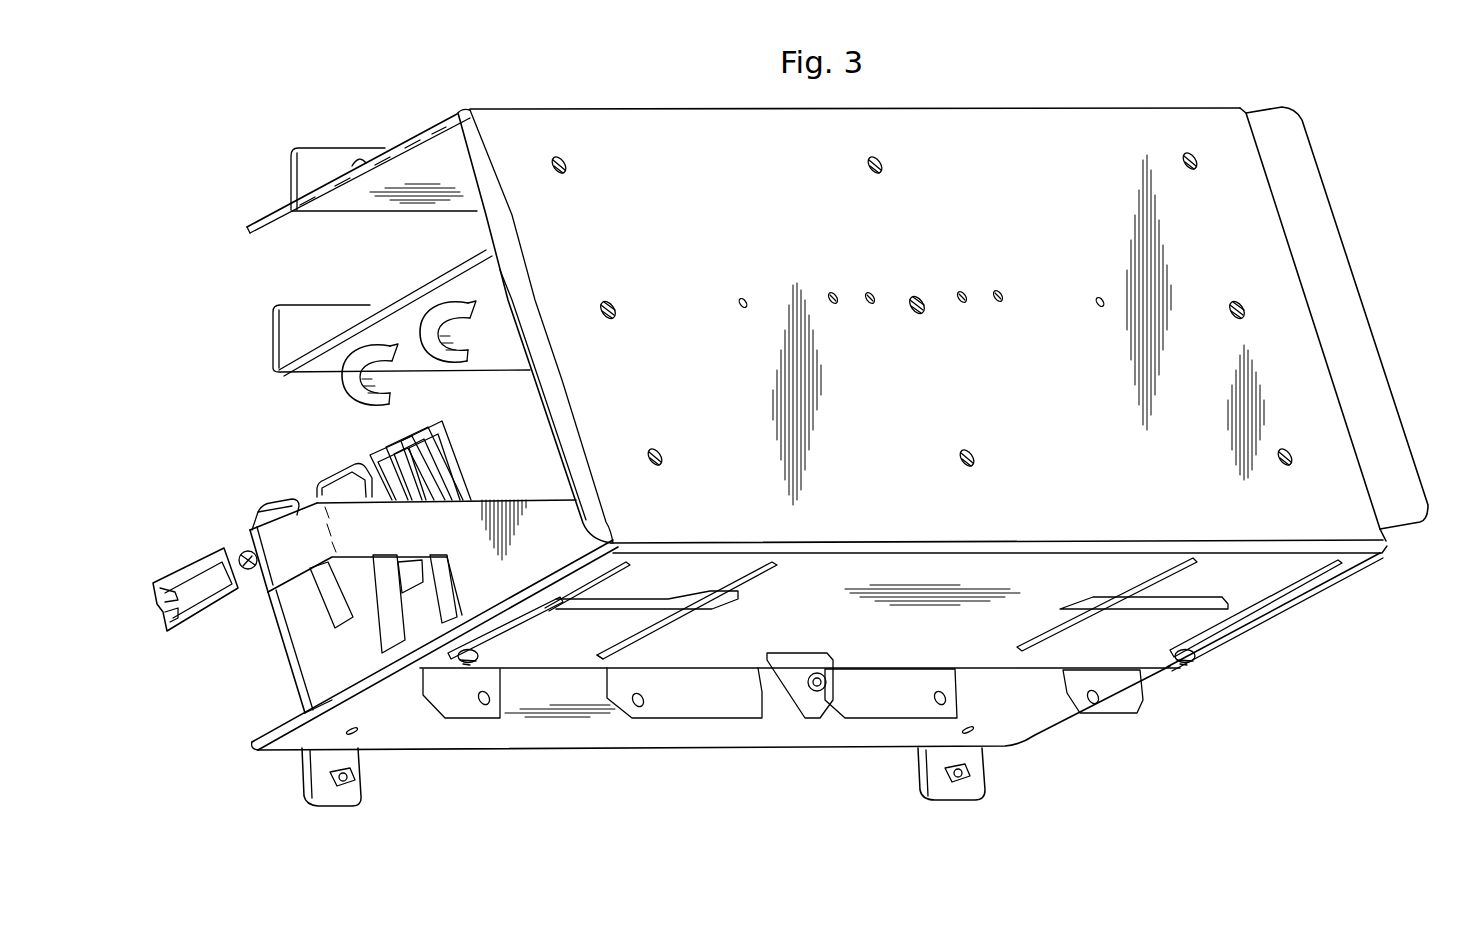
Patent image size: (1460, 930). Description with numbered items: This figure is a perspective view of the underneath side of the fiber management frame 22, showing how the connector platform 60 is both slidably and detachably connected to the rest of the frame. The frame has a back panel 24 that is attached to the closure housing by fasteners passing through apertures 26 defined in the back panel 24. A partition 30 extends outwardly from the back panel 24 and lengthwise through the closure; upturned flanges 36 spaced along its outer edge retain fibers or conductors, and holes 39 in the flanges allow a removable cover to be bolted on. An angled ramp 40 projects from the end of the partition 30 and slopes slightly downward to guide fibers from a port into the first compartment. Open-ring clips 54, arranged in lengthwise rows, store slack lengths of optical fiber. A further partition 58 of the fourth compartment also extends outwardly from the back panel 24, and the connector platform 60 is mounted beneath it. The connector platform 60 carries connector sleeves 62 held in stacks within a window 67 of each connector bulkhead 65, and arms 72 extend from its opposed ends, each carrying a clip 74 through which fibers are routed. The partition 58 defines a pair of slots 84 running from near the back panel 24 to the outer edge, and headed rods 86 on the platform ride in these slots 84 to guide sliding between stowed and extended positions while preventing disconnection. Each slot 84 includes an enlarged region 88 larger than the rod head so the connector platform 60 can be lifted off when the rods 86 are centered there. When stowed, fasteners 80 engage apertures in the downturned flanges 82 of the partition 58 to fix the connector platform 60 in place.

The fiber management frame 22 is at (1048, 88).
The back panel 24 is at (1240, 212).
The apertures 26 is at (1248, 310).
The partition 30 is at (423, 128).
The upturned flanges 36 is at (314, 165).
The holes 39 is at (360, 160).
The angled ramp 40 is at (273, 212).
The clips 54 is at (343, 397).
The partition 58 is at (1315, 600).
The connector platform 60 is at (478, 557).
The connector sleeves 62 is at (450, 440).
The connector bulkhead 65 is at (340, 485).
The window 67 is at (290, 520).
The arms 72 is at (295, 547).
The clip 74 is at (205, 617).
The fasteners 80 is at (360, 782).
The downturned flanges 82 is at (458, 700).
The slots 84 is at (752, 565).
The rods 86 is at (478, 663).
The enlarged region 88 is at (547, 610).